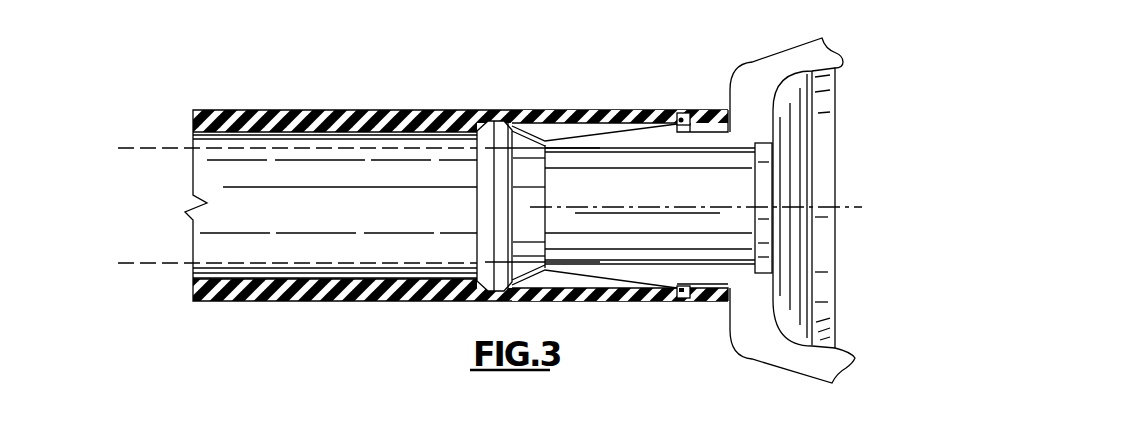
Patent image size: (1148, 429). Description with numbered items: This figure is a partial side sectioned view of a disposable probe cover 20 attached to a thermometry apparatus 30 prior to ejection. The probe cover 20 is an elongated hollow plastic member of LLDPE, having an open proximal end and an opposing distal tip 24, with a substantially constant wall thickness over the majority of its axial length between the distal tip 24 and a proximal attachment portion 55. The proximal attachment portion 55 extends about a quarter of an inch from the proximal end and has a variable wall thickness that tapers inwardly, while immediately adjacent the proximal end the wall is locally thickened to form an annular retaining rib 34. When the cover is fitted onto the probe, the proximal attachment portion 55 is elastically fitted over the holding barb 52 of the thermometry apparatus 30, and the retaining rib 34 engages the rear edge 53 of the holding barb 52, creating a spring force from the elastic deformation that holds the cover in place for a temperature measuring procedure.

The probe cover 20 is at (375, 105).
The distal tip 24 is at (724, 302).
The thermometry apparatus 30 is at (765, 74).
The annular retaining rib 34 is at (683, 112).
The holding barb 52 is at (587, 140).
The rear edge 53 is at (672, 112).
The proximal attachment portion 55 is at (587, 312).